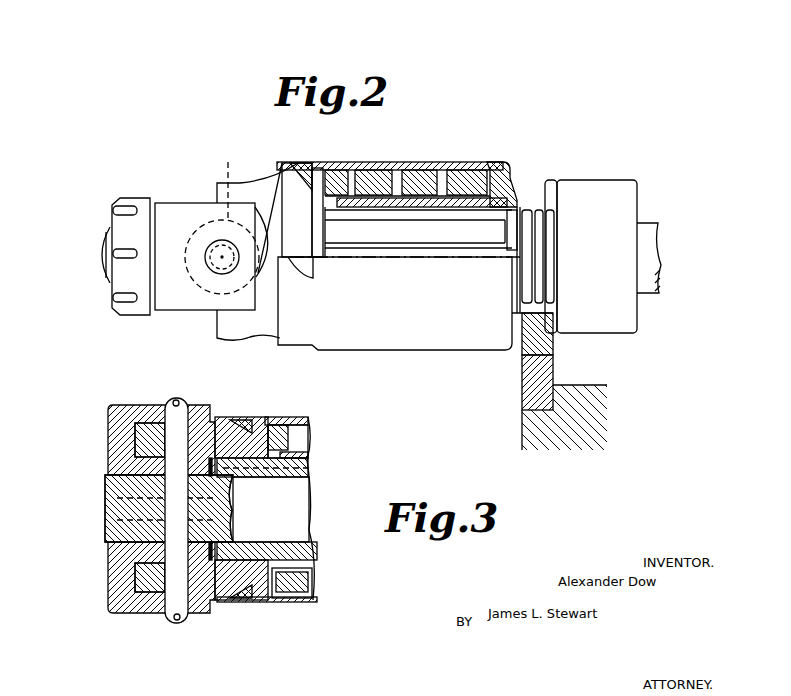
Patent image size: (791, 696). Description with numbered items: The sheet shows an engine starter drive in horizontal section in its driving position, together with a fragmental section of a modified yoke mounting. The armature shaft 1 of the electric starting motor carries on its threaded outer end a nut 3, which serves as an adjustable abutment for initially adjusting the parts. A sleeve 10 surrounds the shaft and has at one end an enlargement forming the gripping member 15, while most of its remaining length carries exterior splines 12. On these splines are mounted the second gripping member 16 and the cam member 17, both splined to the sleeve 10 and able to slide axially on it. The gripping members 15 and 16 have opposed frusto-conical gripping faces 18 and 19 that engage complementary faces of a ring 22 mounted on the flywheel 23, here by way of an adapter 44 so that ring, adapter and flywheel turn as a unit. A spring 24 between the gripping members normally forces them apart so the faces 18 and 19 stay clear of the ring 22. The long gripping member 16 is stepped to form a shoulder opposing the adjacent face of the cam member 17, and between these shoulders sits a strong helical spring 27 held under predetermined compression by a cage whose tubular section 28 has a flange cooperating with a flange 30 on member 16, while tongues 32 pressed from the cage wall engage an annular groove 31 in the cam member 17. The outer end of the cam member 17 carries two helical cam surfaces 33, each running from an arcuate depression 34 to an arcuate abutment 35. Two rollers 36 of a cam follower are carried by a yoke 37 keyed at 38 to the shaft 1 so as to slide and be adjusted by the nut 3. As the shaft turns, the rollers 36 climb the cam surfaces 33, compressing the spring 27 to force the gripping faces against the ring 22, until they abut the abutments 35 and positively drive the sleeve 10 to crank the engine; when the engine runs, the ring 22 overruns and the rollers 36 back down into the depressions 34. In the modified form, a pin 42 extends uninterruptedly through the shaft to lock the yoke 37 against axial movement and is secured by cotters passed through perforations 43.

In FIG. 2, the armature shaft 1 is at (96, 256).
In FIG. 3, the armature shaft 1 is at (300, 496).
In FIG. 2, the nut 3 is at (117, 200).
In FIG. 2, the sleeve 10 is at (518, 247).
In FIG. 2, the exterior splines 12 is at (450, 210).
In FIG. 2, the gripping member 15 is at (610, 192).
In FIG. 2, the second gripping member 16 is at (413, 208).
In FIG. 3, the second gripping member 16 is at (315, 558).
In FIG. 2, the cam member 17 is at (328, 166).
In FIG. 2, the gripping face 18 is at (558, 181).
In FIG. 2, the gripping face 19 is at (518, 178).
In FIG. 2, the ring 22 is at (540, 340).
In FIG. 2, the flywheel 23 is at (593, 410).
In FIG. 2, the spring 24 is at (538, 208).
In FIG. 2, the helical spring 27 is at (390, 170).
In FIG. 3, the helical spring 27 is at (310, 439).
In FIG. 2, the tubular section 28 is at (438, 162).
In FIG. 3, the tubular section 28 is at (305, 417).
In FIG. 2, the flange 30 is at (490, 162).
In FIG. 2, the annular groove 31 is at (275, 172).
In FIG. 2, the tongues 32 is at (297, 161).
In FIG. 3, the tongues 32 is at (245, 604).
In FIG. 2, the cam surface 33 is at (262, 273).
In FIG. 2, the arcuate depression 34 is at (262, 327).
In FIG. 2, the arcuate abutment 35 is at (221, 181).
In FIG. 2, the roller 36 is at (183, 217).
In FIG. 3, the roller 36 is at (150, 441).
In FIG. 3, the yoke 37 is at (112, 405).
In FIG. 3, the key 38 is at (218, 508).
In FIG. 3, the pin 42 is at (172, 418).
In FIG. 3, the perforations 43 is at (175, 397).
In FIG. 2, the adapter 44 is at (553, 371).